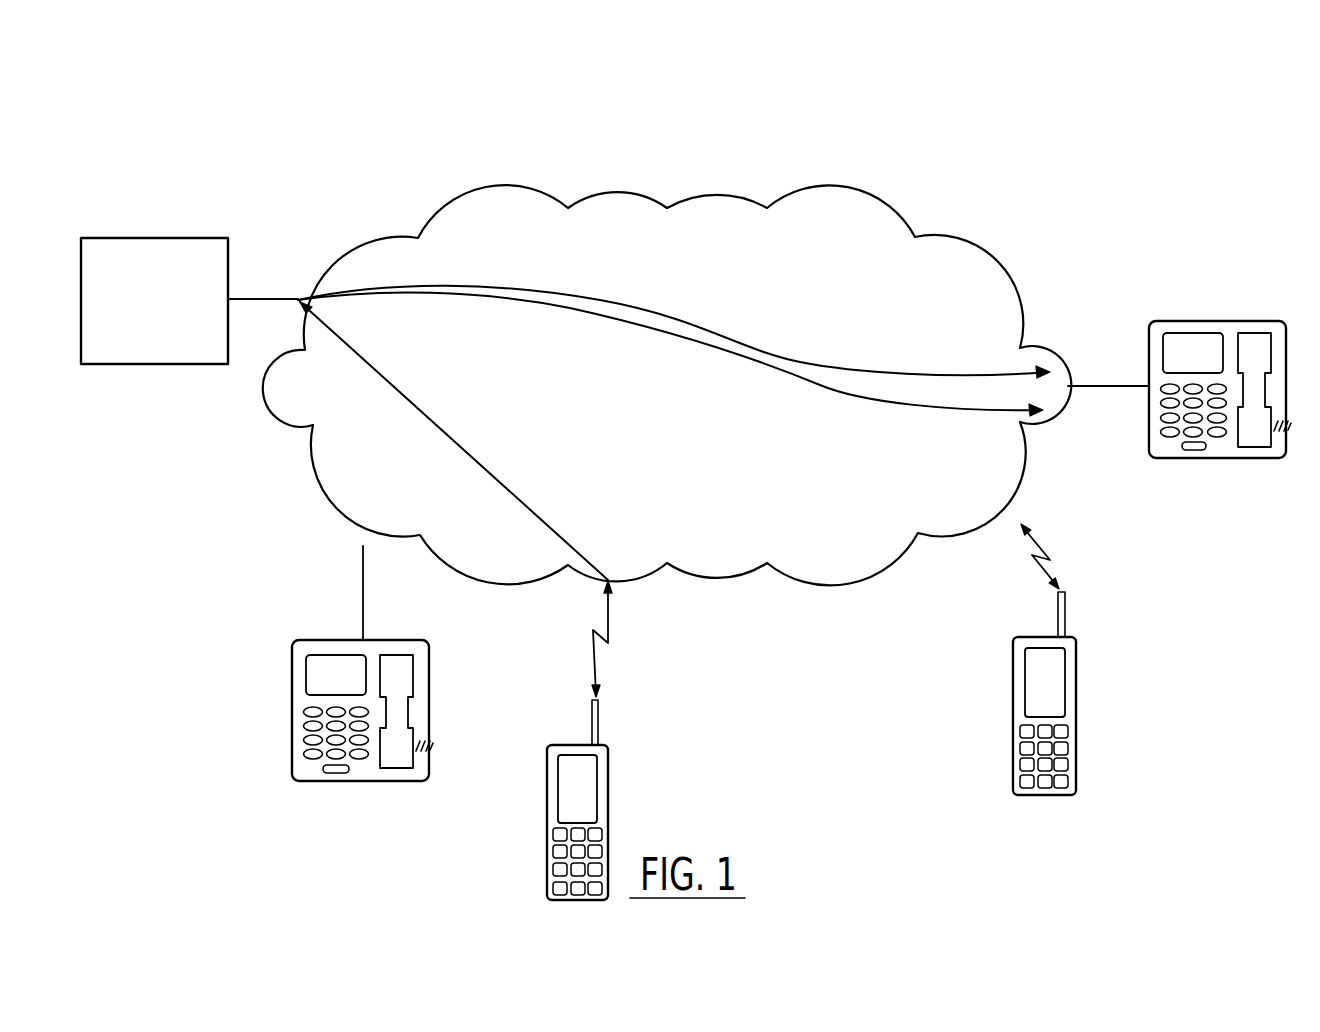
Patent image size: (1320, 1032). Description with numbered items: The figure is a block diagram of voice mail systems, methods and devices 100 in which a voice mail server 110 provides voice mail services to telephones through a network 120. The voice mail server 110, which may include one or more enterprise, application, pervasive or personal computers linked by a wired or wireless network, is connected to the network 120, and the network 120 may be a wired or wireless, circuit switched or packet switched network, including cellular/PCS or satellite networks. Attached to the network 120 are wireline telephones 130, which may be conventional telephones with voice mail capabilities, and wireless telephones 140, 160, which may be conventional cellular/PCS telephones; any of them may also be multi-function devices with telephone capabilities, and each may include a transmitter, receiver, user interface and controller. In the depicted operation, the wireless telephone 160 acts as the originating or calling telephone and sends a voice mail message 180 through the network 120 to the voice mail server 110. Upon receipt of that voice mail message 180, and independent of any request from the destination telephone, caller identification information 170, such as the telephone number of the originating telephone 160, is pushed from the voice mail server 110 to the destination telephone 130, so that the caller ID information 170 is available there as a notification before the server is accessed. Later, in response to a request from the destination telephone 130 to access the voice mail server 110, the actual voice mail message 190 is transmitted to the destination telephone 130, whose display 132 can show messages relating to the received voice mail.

The voice mail systems, methods and devices 100 is at (953, 197).
The voice mail server 110 is at (157, 238).
The network 120 is at (613, 190).
The wireline telephone 130 is at (1225, 320).
The display 132 is at (1192, 342).
The wireless telephone 140 is at (1038, 637).
The wireless telephone 160 is at (571, 745).
The caller identification information 170 is at (841, 367).
The voice mail message 180 is at (420, 410).
The voice mail message 190 is at (868, 400).